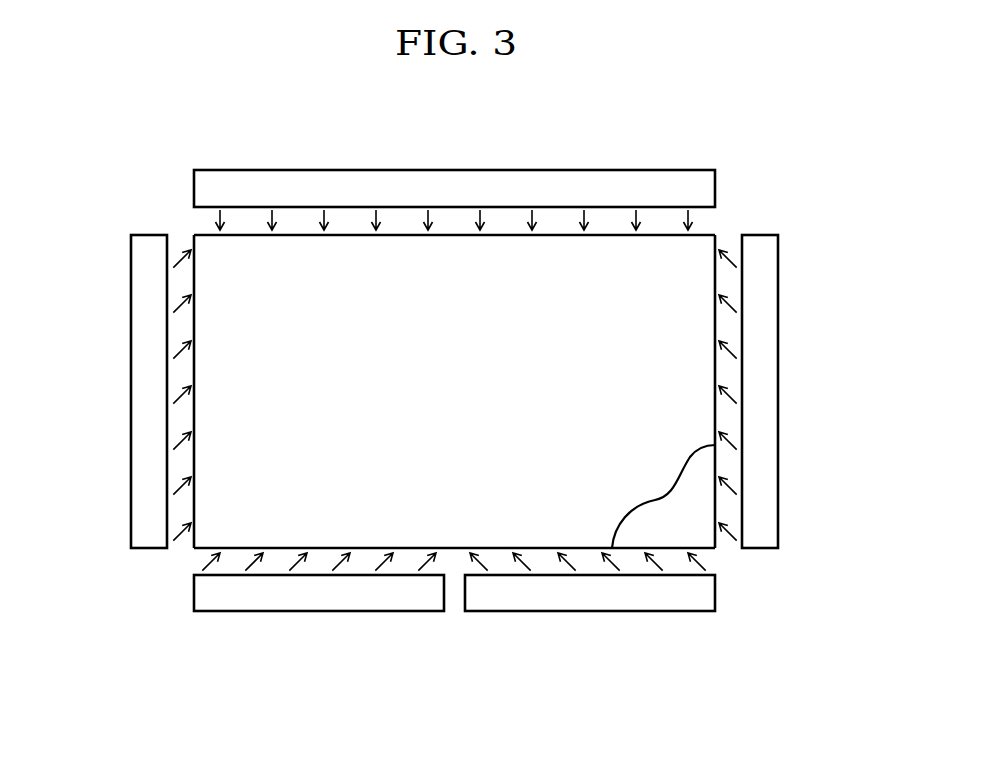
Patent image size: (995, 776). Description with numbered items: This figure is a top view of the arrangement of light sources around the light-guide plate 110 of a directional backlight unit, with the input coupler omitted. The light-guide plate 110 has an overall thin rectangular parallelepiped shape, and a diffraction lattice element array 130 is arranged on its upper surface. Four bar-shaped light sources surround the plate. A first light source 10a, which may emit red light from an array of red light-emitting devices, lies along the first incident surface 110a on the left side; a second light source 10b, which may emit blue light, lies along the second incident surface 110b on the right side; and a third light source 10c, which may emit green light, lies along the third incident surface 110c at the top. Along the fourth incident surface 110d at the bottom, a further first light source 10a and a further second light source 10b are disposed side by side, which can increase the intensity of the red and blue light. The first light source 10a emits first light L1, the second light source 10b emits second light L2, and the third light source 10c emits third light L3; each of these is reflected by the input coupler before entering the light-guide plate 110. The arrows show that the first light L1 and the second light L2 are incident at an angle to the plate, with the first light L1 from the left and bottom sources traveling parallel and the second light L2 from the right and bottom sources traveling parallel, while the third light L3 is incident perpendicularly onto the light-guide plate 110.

The first light source 10a is at (137, 392).
The second light source 10b is at (772, 392).
The third light source 10c is at (455, 170).
The light-guide plate 110 is at (523, 391).
The first incident surface 110a is at (197, 392).
The second incident surface 110b is at (716, 390).
The third incident surface 110c is at (453, 237).
The fourth incident surface 110d is at (456, 548).
The diffraction lattice element array 130 is at (697, 255).
The first light L1 is at (220, 553).
The second light L2 is at (722, 527).
The third light L3 is at (218, 214).